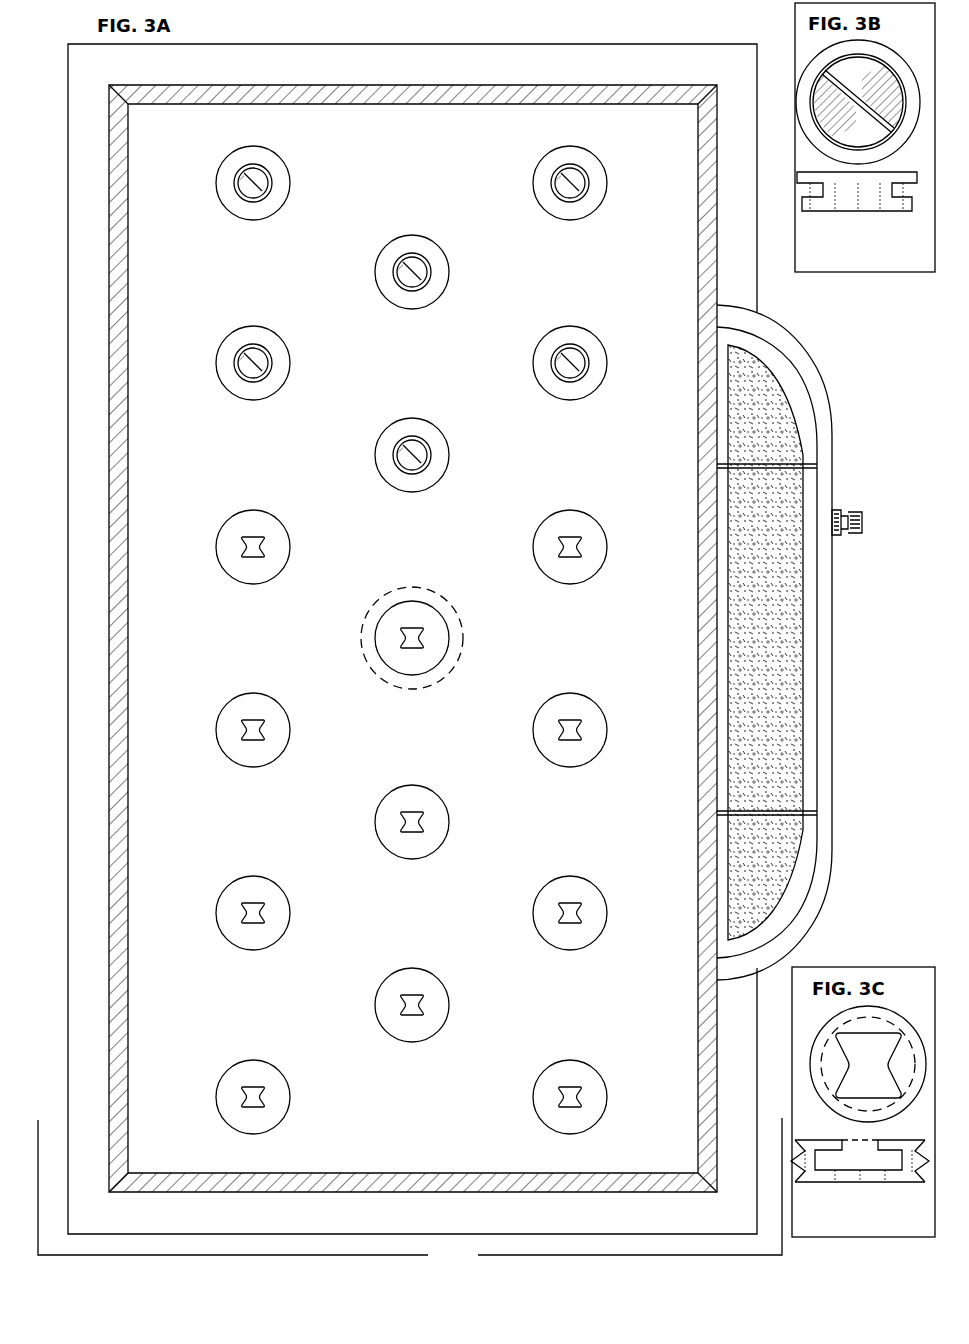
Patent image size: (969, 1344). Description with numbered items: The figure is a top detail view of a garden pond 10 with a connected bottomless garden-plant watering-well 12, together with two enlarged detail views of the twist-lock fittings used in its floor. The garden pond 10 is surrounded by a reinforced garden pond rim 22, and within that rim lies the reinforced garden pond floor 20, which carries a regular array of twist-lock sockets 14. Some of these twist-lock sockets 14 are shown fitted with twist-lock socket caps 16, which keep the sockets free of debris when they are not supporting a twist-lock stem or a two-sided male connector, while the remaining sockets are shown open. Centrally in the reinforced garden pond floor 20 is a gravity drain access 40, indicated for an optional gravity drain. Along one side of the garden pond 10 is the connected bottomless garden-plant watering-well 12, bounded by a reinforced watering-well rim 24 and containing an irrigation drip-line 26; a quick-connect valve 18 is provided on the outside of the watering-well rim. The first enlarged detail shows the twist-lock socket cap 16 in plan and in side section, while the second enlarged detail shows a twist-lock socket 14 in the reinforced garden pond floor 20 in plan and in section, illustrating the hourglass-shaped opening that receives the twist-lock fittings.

In FIG. 3A, the garden pond 10 is at (448, 1247).
In FIG. 3A, the bottomless garden-plant watering-well 12 is at (802, 813).
In FIG. 3A, the twist-lock socket 14 is at (241, 909).
In FIG. 3C, the twist-lock socket 14 is at (864, 1170).
In FIG. 3A, the twist-lock socket cap 16 is at (236, 187).
In FIG. 3B, the twist-lock socket cap 16 is at (856, 222).
In FIG. 3A, the quick-connect valve 18 is at (873, 526).
In FIG. 3A, the reinforced garden pond floor 20 is at (220, 444).
In FIG. 3A, the reinforced garden pond rim 22 is at (85, 244).
In FIG. 3A, the reinforced watering-well rim 24 is at (841, 736).
In FIG. 3A, the irrigation drip-line 26 is at (805, 393).
In FIG. 3A, the gravity drain access 40 is at (471, 658).